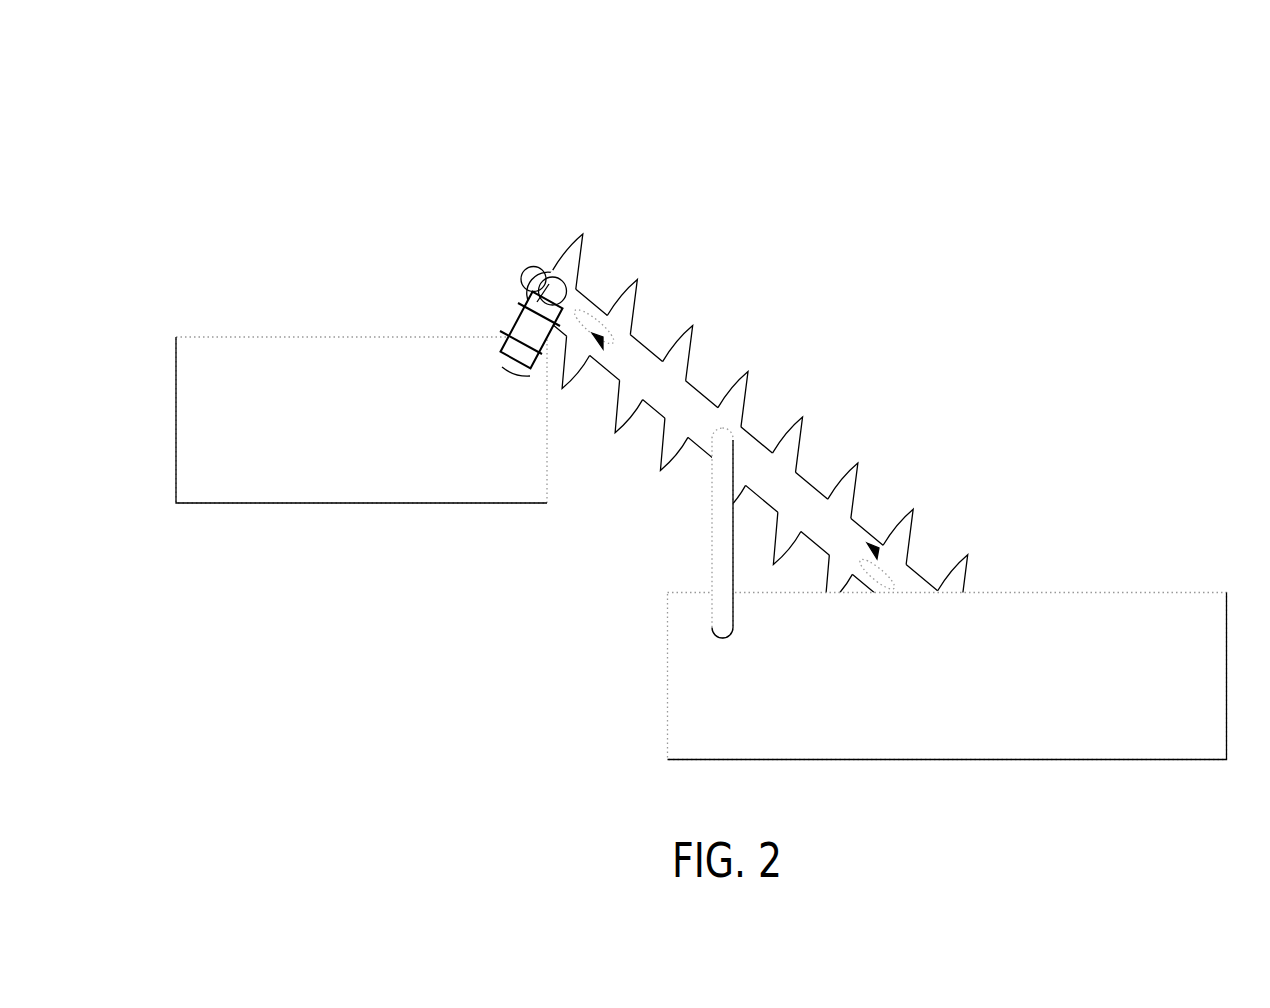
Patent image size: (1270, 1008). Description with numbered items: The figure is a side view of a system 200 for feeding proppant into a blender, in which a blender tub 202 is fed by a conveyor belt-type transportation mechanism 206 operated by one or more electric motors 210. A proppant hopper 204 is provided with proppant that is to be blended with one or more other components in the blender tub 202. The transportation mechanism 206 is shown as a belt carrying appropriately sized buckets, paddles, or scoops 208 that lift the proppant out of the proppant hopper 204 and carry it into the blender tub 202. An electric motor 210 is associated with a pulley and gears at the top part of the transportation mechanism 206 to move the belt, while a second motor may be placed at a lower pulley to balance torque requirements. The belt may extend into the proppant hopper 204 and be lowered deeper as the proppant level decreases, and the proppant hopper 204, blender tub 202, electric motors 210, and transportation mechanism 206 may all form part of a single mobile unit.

The system 200 is at (1085, 143).
The blender tub 202 is at (337, 357).
The proppant hopper 204 is at (1095, 592).
The conveyor belt-type transportation mechanism 206 is at (758, 438).
The buckets, paddles, or scoops 208 is at (702, 335).
The electric motor 210 is at (533, 265).